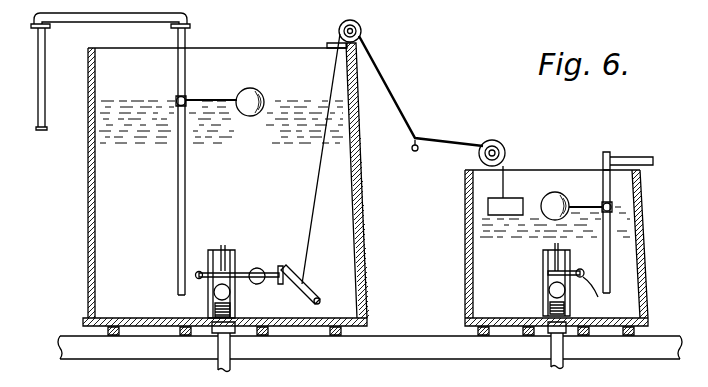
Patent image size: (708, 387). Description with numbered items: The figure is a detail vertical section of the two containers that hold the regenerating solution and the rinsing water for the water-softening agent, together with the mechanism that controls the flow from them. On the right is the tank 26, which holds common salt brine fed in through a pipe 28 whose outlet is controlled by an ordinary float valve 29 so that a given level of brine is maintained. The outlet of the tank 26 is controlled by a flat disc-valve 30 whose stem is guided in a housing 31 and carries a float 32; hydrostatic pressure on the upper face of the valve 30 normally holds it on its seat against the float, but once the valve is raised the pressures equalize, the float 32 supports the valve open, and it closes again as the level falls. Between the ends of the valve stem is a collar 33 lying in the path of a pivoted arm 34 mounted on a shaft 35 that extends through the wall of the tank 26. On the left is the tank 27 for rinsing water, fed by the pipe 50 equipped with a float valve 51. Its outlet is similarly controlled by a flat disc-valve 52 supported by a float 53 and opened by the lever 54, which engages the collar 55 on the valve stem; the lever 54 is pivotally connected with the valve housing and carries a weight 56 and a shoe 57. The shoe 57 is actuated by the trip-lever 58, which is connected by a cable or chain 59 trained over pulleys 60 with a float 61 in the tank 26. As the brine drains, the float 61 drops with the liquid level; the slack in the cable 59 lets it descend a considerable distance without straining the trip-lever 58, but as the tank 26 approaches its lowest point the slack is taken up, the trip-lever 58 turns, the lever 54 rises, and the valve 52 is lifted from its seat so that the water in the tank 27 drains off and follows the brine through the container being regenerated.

The tank 26 is at (641, 278).
The tank 27 is at (88, 190).
The pipe 28 is at (633, 159).
The float 29 is at (556, 195).
The flat disc-valve 30 is at (550, 304).
The housing 31 is at (547, 274).
The float 32 is at (549, 290).
The collar 33 is at (543, 262).
The pivoted arm 34 is at (578, 269).
The shaft 35 is at (598, 296).
The pipe 50 is at (185, 182).
The float valve 51 is at (185, 97).
The flat disc-valve 52 is at (237, 325).
The float 53 is at (214, 294).
The lever 54 is at (239, 271).
The collar 55 is at (229, 262).
The weight 56 is at (259, 283).
The shoe 57 is at (280, 266).
The trip-lever 58 is at (304, 291).
The cable or chain 59 is at (320, 198).
The pulleys 60 is at (482, 144).
The float 61 is at (506, 201).